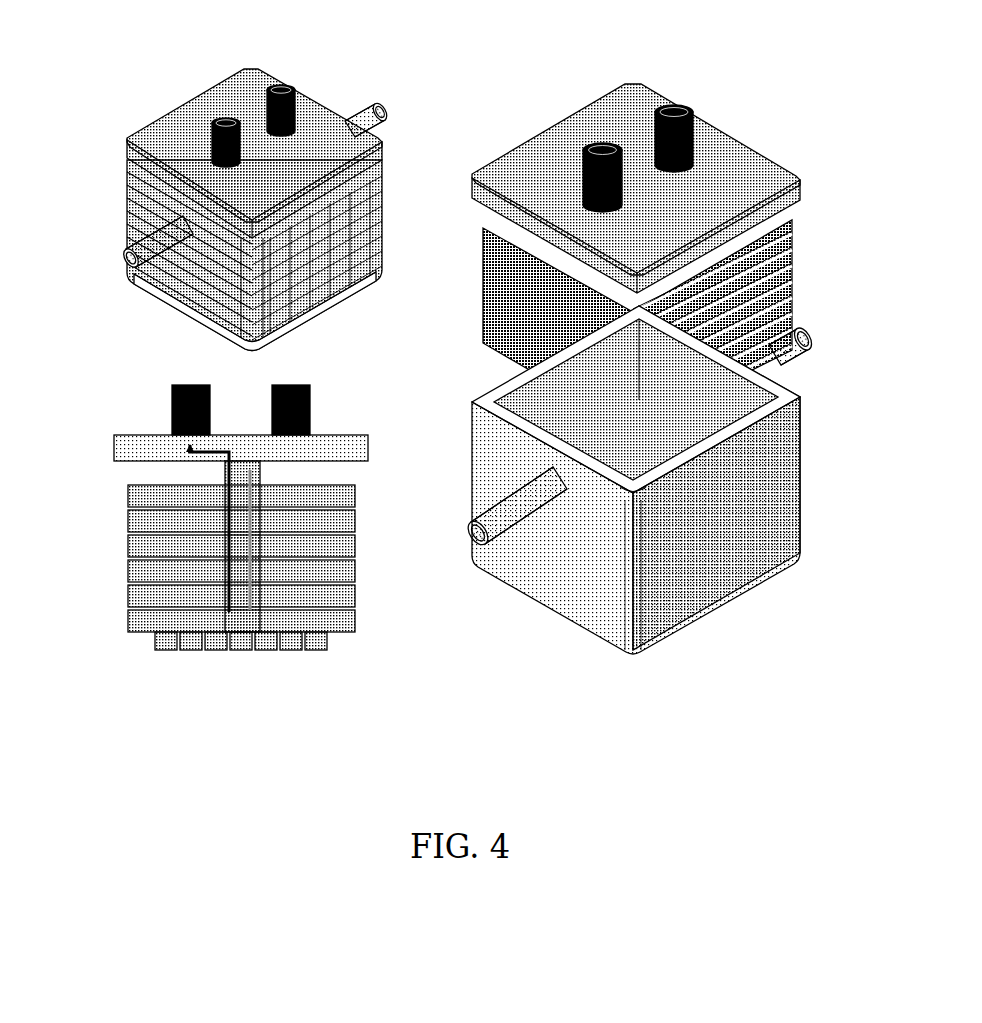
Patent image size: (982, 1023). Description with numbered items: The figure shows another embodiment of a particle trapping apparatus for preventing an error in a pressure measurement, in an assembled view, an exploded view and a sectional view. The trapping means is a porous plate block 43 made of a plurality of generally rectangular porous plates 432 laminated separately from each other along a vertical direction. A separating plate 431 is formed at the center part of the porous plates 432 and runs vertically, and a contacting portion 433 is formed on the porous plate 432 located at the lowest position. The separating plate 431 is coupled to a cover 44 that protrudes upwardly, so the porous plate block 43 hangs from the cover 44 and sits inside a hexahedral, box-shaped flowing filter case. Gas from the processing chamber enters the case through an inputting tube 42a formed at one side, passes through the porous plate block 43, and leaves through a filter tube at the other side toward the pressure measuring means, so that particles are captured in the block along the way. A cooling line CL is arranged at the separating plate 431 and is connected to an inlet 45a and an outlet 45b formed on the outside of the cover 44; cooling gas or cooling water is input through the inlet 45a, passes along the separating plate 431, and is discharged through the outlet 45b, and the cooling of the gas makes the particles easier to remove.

The inputting tube 42a is at (147, 250).
The porous plate block 43 is at (783, 257).
The separating plate 431 is at (243, 587).
The porous plate 432 is at (130, 493).
The contacting portion 433 is at (165, 651).
The cover 44 is at (163, 128).
The inlet 45a is at (277, 88).
The outlet 45b is at (223, 122).
The cooling line CL is at (251, 600).